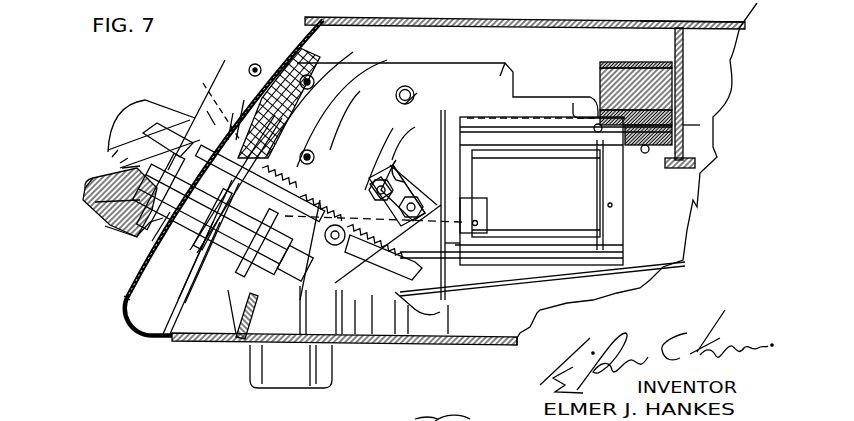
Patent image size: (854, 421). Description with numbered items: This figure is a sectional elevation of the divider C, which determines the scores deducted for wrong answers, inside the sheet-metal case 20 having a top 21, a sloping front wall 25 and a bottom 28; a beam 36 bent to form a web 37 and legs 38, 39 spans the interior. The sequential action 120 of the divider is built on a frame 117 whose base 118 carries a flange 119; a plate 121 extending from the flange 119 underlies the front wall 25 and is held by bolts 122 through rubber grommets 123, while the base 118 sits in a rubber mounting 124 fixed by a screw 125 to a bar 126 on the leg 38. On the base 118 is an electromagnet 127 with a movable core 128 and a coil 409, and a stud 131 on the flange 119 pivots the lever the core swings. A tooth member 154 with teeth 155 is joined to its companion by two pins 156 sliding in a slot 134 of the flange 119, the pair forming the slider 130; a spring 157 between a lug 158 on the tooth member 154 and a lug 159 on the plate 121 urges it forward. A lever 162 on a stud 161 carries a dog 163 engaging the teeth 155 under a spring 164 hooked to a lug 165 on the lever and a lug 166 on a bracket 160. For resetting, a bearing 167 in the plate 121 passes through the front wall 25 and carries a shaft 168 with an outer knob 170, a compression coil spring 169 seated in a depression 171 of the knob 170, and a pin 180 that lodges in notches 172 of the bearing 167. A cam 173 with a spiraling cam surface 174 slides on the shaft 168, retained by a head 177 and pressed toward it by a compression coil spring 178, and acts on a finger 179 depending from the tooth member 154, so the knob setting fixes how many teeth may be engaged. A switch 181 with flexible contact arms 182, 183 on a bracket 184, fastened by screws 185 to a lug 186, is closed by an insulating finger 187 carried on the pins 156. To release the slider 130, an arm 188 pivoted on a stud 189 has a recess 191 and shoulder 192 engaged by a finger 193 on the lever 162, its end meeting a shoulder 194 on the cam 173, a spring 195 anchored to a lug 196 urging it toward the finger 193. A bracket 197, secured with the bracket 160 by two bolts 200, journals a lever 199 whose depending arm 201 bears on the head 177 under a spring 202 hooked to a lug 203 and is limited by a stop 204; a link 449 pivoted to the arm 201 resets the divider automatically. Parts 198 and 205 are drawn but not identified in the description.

The case 20 is at (642, 169).
The top 21 is at (712, 21).
The front wall 25 is at (284, 56).
The bottom 28 is at (513, 347).
The beam 36 is at (684, 82).
The web 37 is at (700, 125).
The leg 38 is at (620, 62).
The leg 39 is at (698, 160).
The frame 117 is at (513, 67).
The base 118 is at (575, 113).
The flange 119 is at (498, 76).
The sequential action 120 is at (95, 202).
The plate 121 is at (152, 241).
The bolts 122 is at (137, 236).
The rubber grommets 123 is at (124, 296).
The rubber mounting 124 is at (680, 110).
The screw 125 is at (645, 153).
The bar 126 is at (632, 83).
The electromagnet 127 is at (600, 230).
The movable core 128 is at (483, 180).
The slider 130 is at (467, 257).
The stud 131 is at (417, 93).
The slot 134 is at (180, 143).
The tooth member 154 is at (473, 215).
The teeth 155 is at (342, 160).
The pins 156 is at (457, 243).
The spring 157 is at (185, 128).
The lug 158 is at (433, 270).
The lug 159 is at (180, 120).
The bracket 160 is at (470, 147).
The stud 161 is at (322, 138).
The lever 162 is at (276, 60).
The dog 163 is at (376, 155).
The spring 164 is at (411, 85).
The lug 165 is at (324, 96).
The lug 166 is at (395, 160).
The bearing 167 is at (105, 226).
The shaft 168 is at (122, 168).
The compression coil spring 169 is at (95, 183).
The knob 170 is at (120, 163).
The depression 171 is at (112, 157).
The notches 172 is at (205, 230).
The cam 173 is at (233, 344).
The spiraling cam surface 174 is at (251, 306).
The head 177 is at (301, 297).
The compression coil spring 178 is at (188, 267).
The finger 179 is at (258, 283).
The pin 180 is at (212, 240).
The switch 181 is at (410, 346).
The contact arm 182 is at (372, 346).
The contact arm 183 is at (395, 346).
The bracket 184 is at (440, 312).
The screws 185 is at (450, 346).
The lug 186 is at (430, 297).
The insulating finger 187 is at (355, 346).
The arm 188 is at (292, 130).
The stud 189 is at (310, 75).
The recess 191 is at (233, 113).
The shoulder 192 is at (244, 100).
The finger 193 is at (247, 103).
The shoulder 194 is at (202, 300).
The spring 195 is at (392, 61).
The lug 196 is at (415, 127).
The bracket 197 is at (399, 228).
The rod 198 is at (335, 297).
The lever 199 is at (358, 113).
The bolts 200 is at (488, 199).
The arm 201 is at (291, 366).
The spring 202 is at (398, 172).
The lug 203 is at (566, 191).
The stop 204 is at (313, 386).
The screw 205 is at (255, 64).
The coil 409 is at (622, 203).
The link 449 is at (607, 273).
The divider C is at (214, 102).